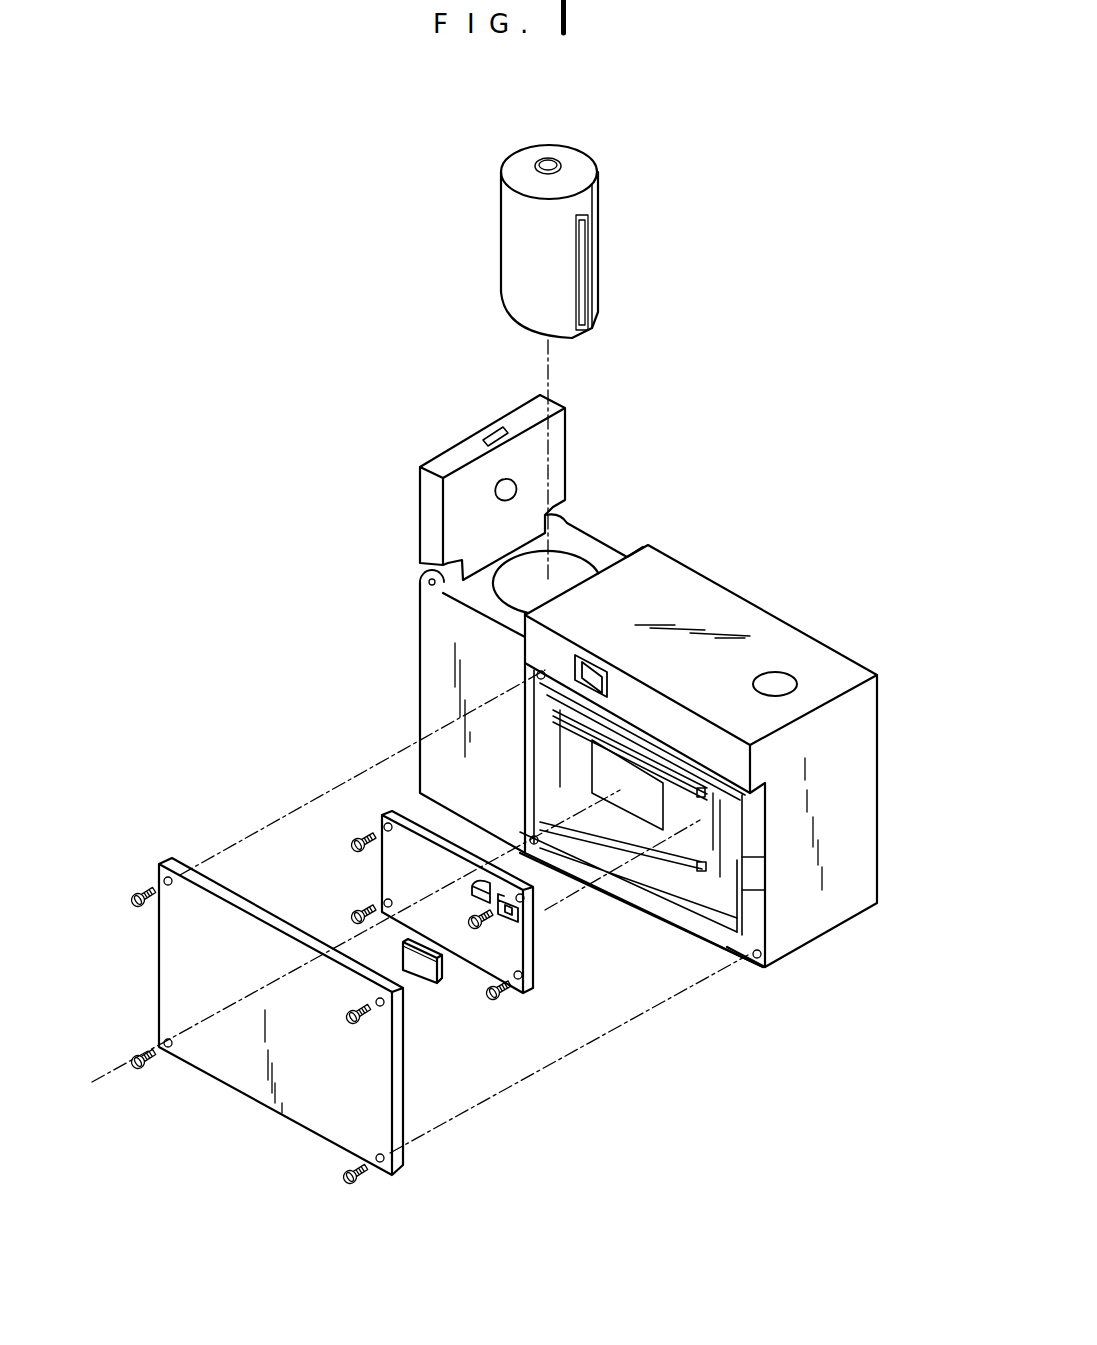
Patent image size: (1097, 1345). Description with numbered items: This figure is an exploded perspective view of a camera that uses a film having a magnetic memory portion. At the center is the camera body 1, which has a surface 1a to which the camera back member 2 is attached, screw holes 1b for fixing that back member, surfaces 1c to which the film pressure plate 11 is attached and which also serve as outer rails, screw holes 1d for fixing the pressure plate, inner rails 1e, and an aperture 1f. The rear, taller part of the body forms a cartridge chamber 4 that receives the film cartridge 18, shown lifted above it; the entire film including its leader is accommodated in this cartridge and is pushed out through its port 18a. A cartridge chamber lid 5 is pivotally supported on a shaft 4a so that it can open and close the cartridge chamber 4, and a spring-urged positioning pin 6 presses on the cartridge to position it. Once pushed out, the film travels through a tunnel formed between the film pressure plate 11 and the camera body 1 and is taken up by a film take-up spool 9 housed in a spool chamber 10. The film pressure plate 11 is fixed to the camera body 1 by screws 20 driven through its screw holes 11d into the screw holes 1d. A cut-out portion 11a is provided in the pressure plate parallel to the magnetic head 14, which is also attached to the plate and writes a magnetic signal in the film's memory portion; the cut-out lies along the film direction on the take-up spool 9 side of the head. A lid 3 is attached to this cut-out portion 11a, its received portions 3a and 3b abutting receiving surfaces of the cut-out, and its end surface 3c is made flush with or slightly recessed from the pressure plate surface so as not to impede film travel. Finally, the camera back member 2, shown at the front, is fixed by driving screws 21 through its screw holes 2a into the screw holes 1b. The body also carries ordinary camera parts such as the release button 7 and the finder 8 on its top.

The camera body 1 is at (865, 725).
The surface 1a is at (727, 947).
The screw holes 1b is at (545, 675).
The surfaces 1c is at (708, 900).
The screw holes 1d is at (533, 812).
The inner rails 1e is at (615, 827).
The aperture 1f is at (585, 790).
The camera back member 2 is at (245, 1083).
The screw holes 2a is at (153, 1032).
The lid 3 is at (430, 980).
The received portion 3a is at (453, 957).
The received portion 3b is at (407, 950).
The end surface 3c is at (455, 980).
The cartridge chamber 4 is at (583, 537).
The shaft 4a is at (425, 581).
The cartridge chamber lid 5 is at (425, 497).
The positioning pin 6 is at (500, 485).
The release button 7 is at (790, 675).
The finder 8 is at (597, 663).
The film take-up spool 9 is at (740, 857).
The spool chamber 10 is at (733, 890).
The film pressure plate 11 is at (417, 822).
The cut-out portion 11a is at (510, 900).
The screw holes 11d is at (382, 900).
The magnetic head 14 is at (473, 893).
The film cartridge 18 is at (500, 227).
The port 18a is at (595, 330).
The screws 20 is at (372, 838).
The screws 21 is at (145, 910).